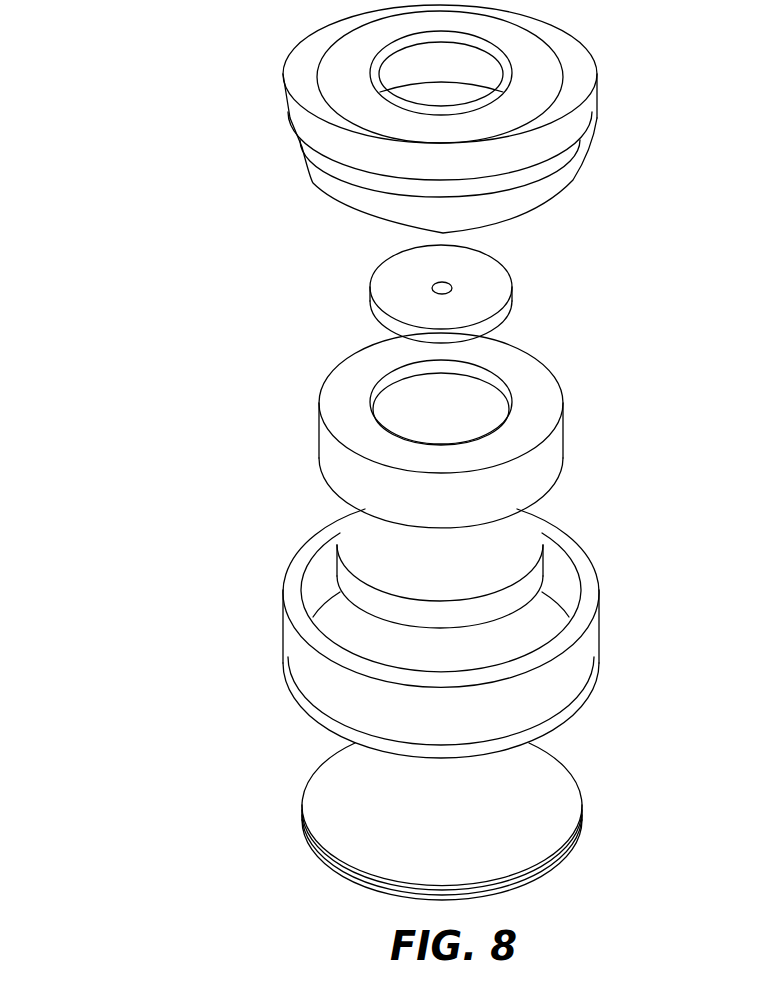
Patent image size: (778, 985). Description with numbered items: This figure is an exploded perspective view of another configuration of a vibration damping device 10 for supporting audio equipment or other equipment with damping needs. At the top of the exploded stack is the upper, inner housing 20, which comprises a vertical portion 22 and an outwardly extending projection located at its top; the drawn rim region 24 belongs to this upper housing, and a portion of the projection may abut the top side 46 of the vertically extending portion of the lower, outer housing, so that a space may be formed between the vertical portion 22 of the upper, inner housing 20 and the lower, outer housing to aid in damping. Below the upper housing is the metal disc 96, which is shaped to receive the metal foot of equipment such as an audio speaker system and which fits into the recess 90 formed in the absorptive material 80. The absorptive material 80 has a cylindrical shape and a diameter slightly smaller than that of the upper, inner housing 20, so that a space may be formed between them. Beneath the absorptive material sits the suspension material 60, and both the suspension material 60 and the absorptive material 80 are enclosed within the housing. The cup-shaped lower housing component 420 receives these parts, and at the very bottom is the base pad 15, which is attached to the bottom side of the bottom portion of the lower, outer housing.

The vibration damping device 10 is at (200, 55).
The upper, inner housing 20 is at (401, 119).
The vertical portion 22 is at (333, 180).
The cap rim 24 is at (293, 127).
The metal disc 96 is at (482, 296).
The recess 90 is at (482, 404).
The absorptive material 80 is at (488, 429).
The suspension material 60 is at (493, 568).
The top side 46 is at (295, 587).
The housing 420 is at (455, 629).
The base pad 15 is at (502, 820).